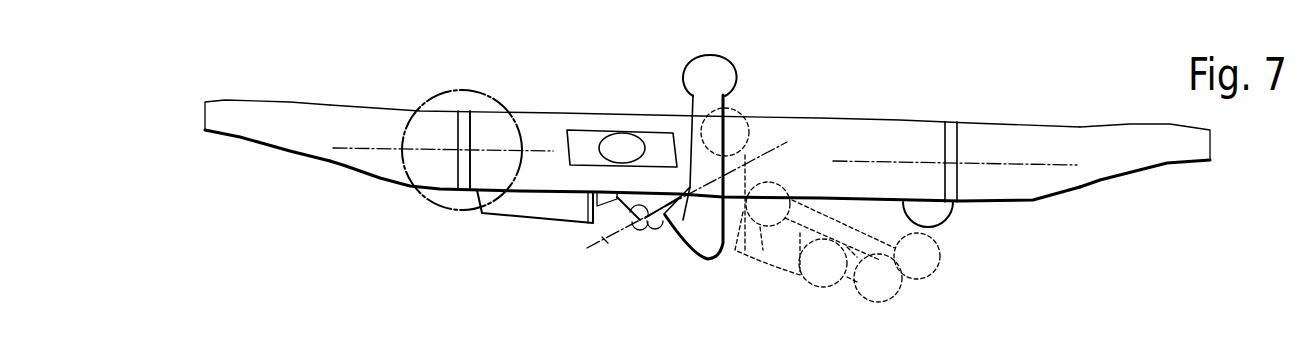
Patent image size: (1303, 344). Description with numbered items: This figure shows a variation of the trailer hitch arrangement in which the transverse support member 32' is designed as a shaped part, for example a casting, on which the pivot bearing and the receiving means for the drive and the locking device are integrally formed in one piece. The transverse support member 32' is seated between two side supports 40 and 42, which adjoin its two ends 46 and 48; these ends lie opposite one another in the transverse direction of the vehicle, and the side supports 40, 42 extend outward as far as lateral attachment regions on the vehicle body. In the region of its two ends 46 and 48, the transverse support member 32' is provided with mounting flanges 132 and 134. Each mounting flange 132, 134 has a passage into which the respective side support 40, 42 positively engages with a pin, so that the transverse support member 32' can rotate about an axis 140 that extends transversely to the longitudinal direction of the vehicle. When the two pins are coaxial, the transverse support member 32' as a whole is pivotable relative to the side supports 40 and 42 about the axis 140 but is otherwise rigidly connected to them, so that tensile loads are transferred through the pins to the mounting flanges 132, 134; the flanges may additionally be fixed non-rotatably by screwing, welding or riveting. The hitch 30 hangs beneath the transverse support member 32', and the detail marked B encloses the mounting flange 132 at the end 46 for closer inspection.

The trailer hitch / towing device 30 is at (605, 240).
The transverse support member 32' is at (705, 117).
The side support 40 is at (248, 130).
The side support 42 is at (1157, 153).
The end of transverse support member 46 is at (478, 137).
The end of transverse support member 48 is at (942, 143).
The mounting flange 132 is at (466, 122).
The mounting flange 134 is at (955, 133).
The axis 140 is at (345, 147).
The detail B is at (450, 210).